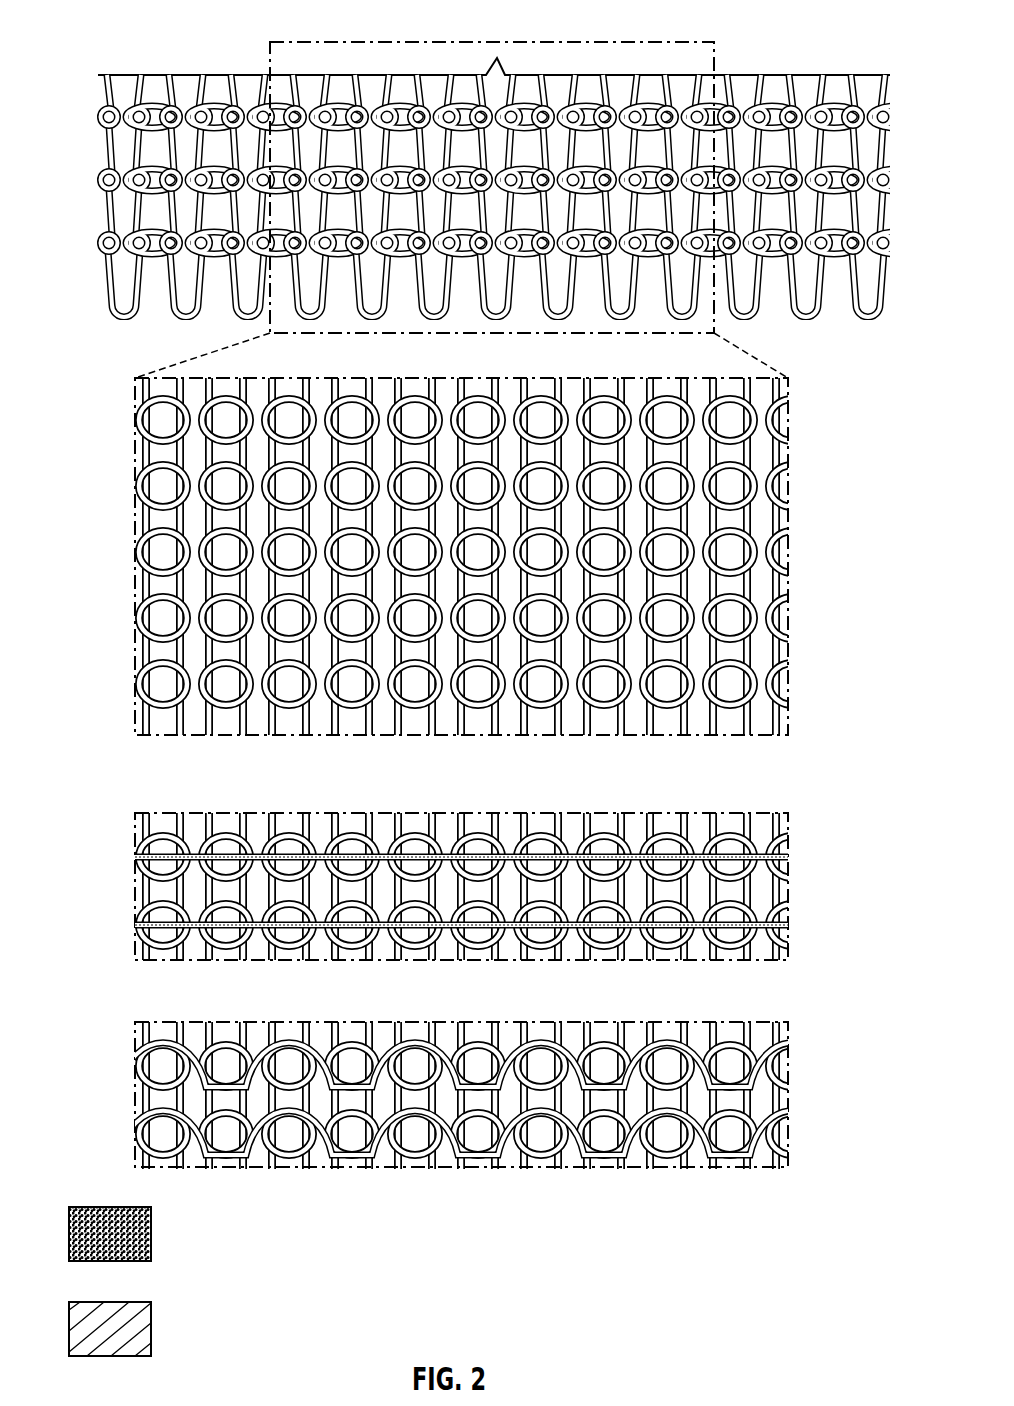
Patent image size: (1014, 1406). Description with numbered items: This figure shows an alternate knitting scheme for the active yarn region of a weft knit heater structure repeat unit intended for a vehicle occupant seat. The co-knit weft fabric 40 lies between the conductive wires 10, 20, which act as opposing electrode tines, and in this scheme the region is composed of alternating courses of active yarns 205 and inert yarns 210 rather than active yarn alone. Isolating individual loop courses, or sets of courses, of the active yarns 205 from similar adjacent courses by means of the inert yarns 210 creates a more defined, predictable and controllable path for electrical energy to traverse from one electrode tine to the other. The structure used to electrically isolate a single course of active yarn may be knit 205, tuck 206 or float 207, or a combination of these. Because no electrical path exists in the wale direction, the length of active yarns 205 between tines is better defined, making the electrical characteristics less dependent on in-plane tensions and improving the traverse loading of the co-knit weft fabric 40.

The conductive wire 10 is at (477, 167).
The conductive wire 20 is at (883, 75).
The co-knit weft fabric 40 is at (720, 52).
The active yarn 205 is at (110, 1207).
The tuck 206 is at (318, 857).
The float 207 is at (397, 1048).
The inert yarn 210 is at (110, 1302).